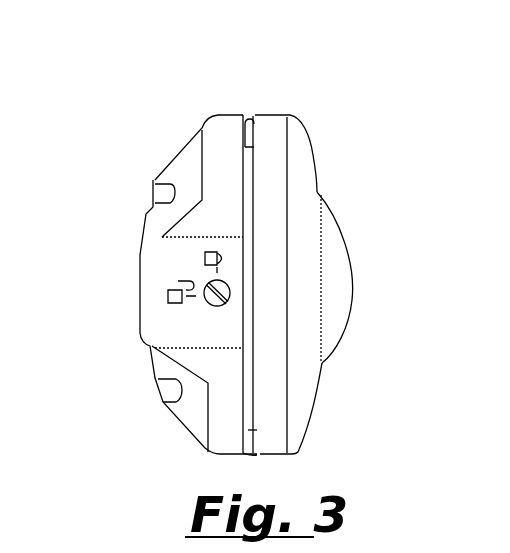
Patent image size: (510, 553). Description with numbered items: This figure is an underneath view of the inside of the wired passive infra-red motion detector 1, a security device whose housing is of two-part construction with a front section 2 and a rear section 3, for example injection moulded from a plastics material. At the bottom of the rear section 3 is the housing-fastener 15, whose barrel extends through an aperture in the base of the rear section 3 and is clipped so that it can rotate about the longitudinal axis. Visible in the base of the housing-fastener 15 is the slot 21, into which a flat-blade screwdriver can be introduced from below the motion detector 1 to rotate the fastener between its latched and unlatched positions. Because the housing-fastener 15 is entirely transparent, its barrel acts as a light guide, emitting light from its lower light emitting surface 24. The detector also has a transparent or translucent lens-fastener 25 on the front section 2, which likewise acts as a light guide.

The passive infra-red motion detector 1 is at (152, 113).
The front section 2 is at (274, 128).
The rear section 3 is at (221, 129).
The housing-fastener 15 is at (205, 293).
The slot 21 is at (228, 302).
The light emitting surface 24 is at (228, 281).
The lens-fastener 25 is at (320, 217).